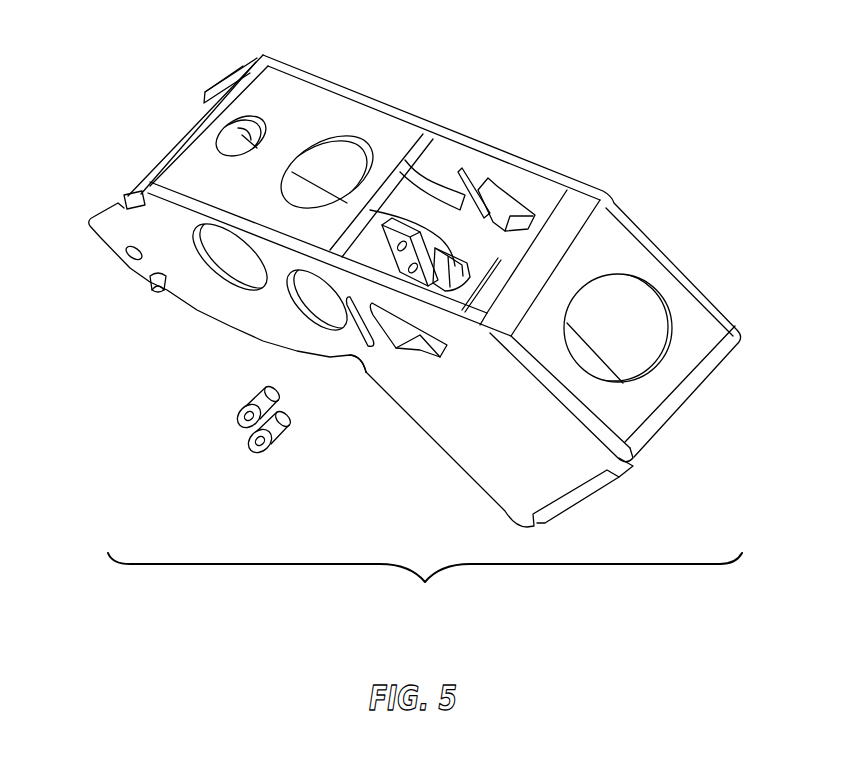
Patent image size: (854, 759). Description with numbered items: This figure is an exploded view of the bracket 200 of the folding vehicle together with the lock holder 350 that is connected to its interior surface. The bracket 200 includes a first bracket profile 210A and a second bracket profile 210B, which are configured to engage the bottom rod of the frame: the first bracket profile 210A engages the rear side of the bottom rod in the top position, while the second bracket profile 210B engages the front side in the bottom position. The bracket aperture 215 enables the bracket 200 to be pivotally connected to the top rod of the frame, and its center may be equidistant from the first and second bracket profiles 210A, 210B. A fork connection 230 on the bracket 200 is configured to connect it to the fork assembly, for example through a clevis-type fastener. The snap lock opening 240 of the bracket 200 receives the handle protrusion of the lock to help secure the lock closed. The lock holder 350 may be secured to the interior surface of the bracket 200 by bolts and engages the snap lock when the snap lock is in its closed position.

The bracket 200 is at (425, 336).
The first bracket profile 210A is at (152, 284).
The second bracket profile 210B is at (358, 361).
The bracket aperture 215 is at (232, 252).
The fork connection 230 is at (632, 312).
The snap lock opening 240 is at (393, 206).
The lock holder 350 is at (448, 262).